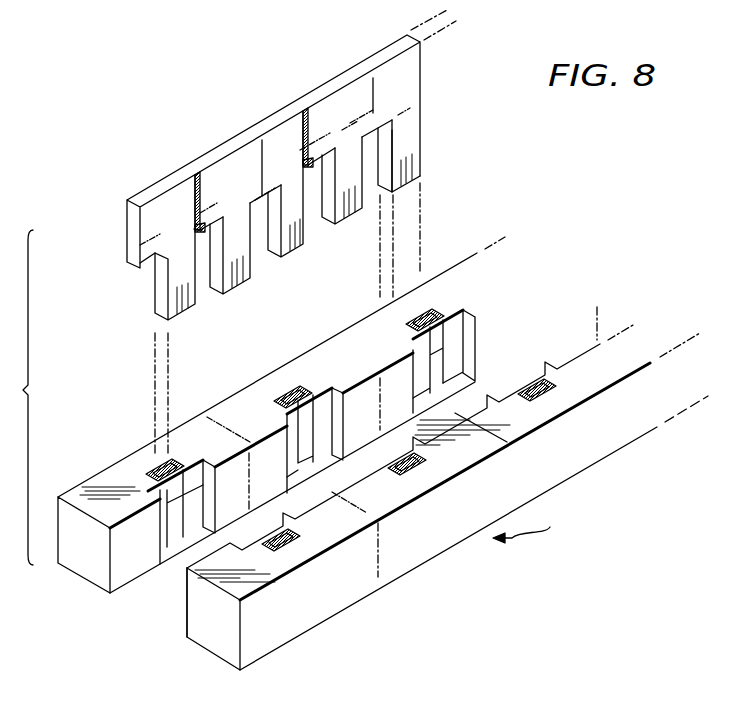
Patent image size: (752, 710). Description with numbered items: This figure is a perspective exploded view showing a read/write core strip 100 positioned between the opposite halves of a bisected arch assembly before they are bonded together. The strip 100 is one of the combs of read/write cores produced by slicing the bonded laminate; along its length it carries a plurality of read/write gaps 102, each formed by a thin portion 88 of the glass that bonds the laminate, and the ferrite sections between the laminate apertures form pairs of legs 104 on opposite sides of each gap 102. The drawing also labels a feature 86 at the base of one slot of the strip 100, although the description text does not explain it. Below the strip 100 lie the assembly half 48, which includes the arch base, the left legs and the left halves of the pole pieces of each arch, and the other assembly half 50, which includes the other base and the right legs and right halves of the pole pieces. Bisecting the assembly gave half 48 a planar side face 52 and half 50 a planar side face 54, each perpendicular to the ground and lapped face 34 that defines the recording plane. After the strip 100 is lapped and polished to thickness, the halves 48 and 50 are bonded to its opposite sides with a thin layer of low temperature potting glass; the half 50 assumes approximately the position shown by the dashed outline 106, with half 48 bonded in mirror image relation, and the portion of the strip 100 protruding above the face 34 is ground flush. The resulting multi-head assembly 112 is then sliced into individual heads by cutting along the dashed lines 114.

The face 34 is at (314, 432).
The assembly half 48 is at (78, 490).
The assembly half 50 is at (412, 488).
The planar side face 52 is at (123, 575).
The planar side face 54 is at (185, 620).
The slot bottom 86 is at (195, 230).
The thin portions of glass 88 is at (197, 200).
The read/write core strip 100 is at (156, 170).
The read/write gaps 102 is at (194, 170).
The legs 104 is at (222, 290).
The dashed outline 106 is at (404, 90).
The multi-head assembly 112 is at (551, 530).
The dashed lines 114 is at (375, 87).